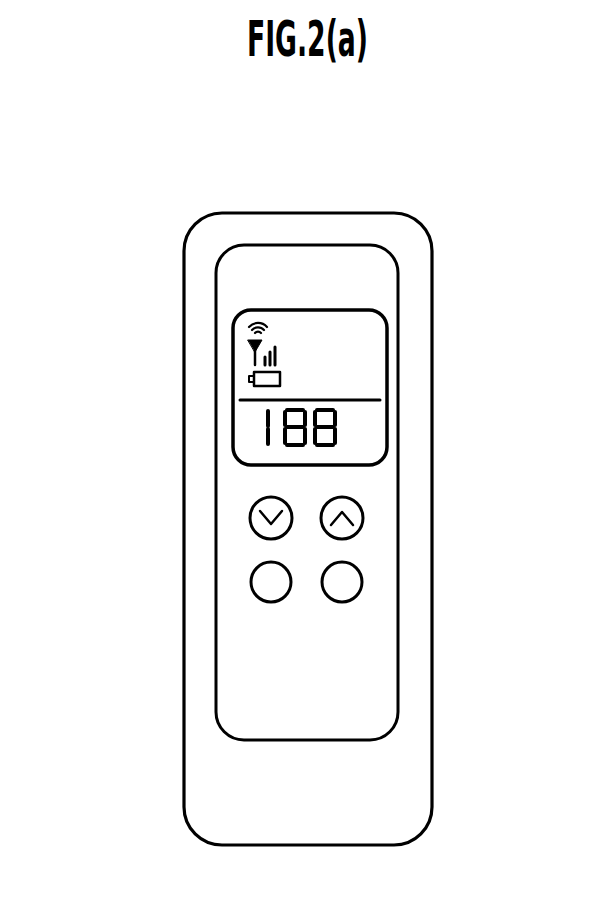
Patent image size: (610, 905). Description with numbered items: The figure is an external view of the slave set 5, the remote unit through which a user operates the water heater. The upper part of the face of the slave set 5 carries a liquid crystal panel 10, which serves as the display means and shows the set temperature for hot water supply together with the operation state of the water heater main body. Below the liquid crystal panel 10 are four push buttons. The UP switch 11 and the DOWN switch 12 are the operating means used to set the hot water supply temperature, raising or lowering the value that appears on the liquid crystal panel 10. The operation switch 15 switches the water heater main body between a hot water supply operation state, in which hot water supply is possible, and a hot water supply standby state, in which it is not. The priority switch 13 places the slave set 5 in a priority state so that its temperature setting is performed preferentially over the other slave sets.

The slave set 5 is at (287, 213).
The liquid crystal panel 10 is at (367, 330).
The UP switch 11 is at (357, 504).
The DOWN switch 12 is at (256, 503).
The priority switch 13 is at (252, 575).
The operation switch 15 is at (361, 589).